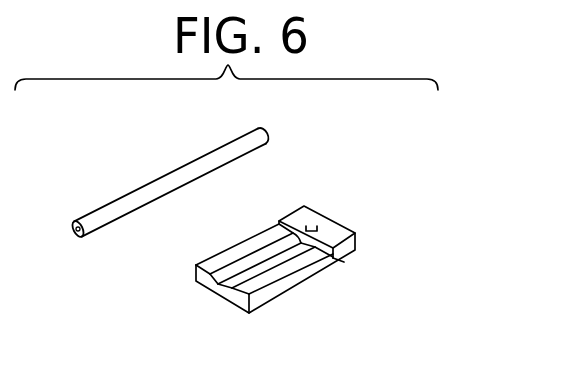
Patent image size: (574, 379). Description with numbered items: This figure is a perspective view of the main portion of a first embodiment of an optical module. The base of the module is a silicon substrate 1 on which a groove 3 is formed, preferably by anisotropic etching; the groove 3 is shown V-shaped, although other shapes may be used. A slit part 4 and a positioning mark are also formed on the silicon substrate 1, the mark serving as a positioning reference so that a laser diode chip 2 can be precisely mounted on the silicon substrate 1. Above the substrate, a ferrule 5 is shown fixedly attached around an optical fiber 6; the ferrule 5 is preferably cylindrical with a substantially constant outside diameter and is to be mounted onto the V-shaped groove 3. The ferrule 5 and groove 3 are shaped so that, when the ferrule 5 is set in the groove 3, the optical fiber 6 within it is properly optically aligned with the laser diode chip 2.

The silicon substrate 1 is at (308, 279).
The laser diode chip 2 is at (315, 230).
The groove 3 is at (260, 285).
The slit part 4 is at (341, 258).
The ferrule 5 is at (210, 154).
The optical fiber 6 is at (75, 238).